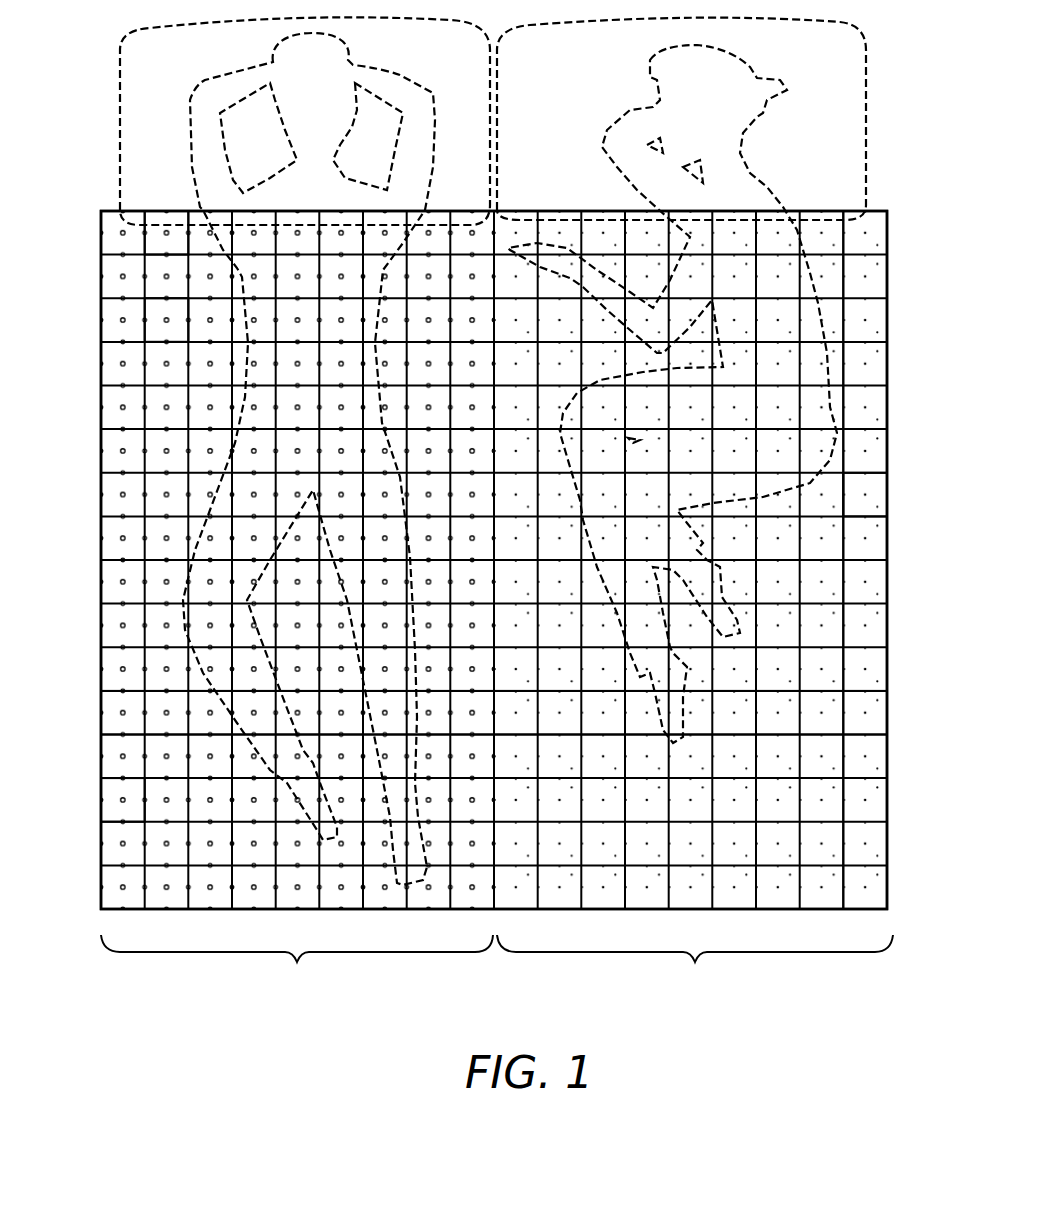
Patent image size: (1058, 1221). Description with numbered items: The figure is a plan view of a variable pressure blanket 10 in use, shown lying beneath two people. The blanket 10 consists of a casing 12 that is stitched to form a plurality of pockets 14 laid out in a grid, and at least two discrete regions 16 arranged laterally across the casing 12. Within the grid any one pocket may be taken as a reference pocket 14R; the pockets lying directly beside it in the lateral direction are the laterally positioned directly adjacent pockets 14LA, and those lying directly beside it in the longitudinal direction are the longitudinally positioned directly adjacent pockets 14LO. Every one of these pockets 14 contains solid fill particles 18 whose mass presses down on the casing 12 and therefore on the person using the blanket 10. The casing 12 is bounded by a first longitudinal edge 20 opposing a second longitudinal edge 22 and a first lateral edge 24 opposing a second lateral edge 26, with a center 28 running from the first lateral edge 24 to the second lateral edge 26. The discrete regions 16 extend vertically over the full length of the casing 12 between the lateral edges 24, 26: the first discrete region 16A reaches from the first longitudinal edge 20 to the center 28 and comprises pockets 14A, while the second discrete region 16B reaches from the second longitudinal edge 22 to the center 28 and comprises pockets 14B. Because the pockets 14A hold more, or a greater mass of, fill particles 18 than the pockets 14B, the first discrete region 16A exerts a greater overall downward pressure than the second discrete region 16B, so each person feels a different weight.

The variable pressure blanket 10 is at (80, 623).
The casing 12 is at (100, 229).
The pockets 14 is at (492, 459).
The pockets of first discrete region 14A is at (234, 459).
The pockets of second discrete region 14B is at (729, 394).
The longitudinally positioned directly adjacent pockets 14LO is at (160, 233).
The laterally positioned directly adjacent pockets 14LA is at (118, 292).
The reference pocket 14R is at (157, 272).
The discrete regions 16 is at (494, 604).
The first discrete region 16A is at (297, 614).
The second discrete region 16B is at (693, 614).
The solid fill particles 18 is at (130, 797).
The first longitudinal edge 20 is at (100, 713).
The second longitudinal edge 22 is at (885, 748).
The first lateral edge 24 is at (470, 215).
The second lateral edge 26 is at (433, 912).
The center 28 is at (497, 838).